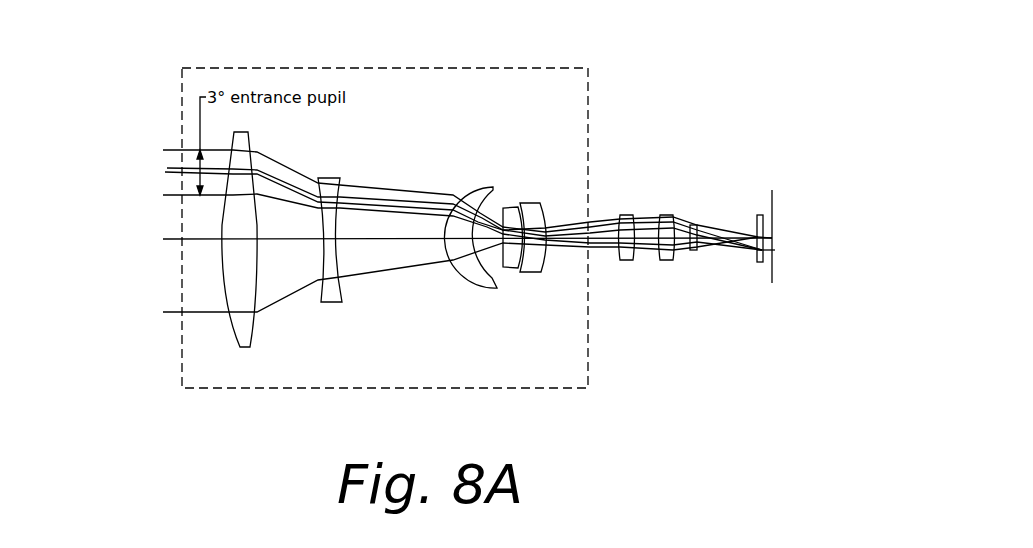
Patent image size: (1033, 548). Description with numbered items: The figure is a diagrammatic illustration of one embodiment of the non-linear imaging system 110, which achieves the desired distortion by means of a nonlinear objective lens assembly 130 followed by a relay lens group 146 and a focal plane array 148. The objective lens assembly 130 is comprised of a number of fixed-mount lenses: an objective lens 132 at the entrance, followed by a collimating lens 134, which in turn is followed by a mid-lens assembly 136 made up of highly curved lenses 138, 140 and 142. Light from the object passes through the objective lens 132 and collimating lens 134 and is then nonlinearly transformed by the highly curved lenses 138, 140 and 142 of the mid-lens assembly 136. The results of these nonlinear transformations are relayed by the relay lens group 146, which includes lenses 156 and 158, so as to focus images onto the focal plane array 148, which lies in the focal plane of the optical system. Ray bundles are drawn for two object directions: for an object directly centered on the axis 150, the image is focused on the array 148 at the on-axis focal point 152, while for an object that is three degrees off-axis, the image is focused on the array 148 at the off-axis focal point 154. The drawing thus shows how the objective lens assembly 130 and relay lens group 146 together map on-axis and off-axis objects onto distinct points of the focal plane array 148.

The non-linear imaging system 110 is at (467, 161).
The nonlinear objective lens assembly 130 is at (590, 114).
The objective lens 132 is at (256, 332).
The collimating lens 134 is at (342, 296).
The mid-lens assembly 136 is at (549, 294).
The highly curved lens 138 is at (482, 186).
The highly curved lens 140 is at (512, 207).
The highly curved lens 142 is at (535, 203).
The relay lens group 146 is at (673, 265).
The focal plane array 148 is at (772, 192).
The axis 150 is at (165, 172).
The on-axis focal point 152 is at (773, 237).
The 3° off-axis focal point 154 is at (772, 257).
The relay lens 156 is at (627, 213).
The relay lens 158 is at (667, 213).